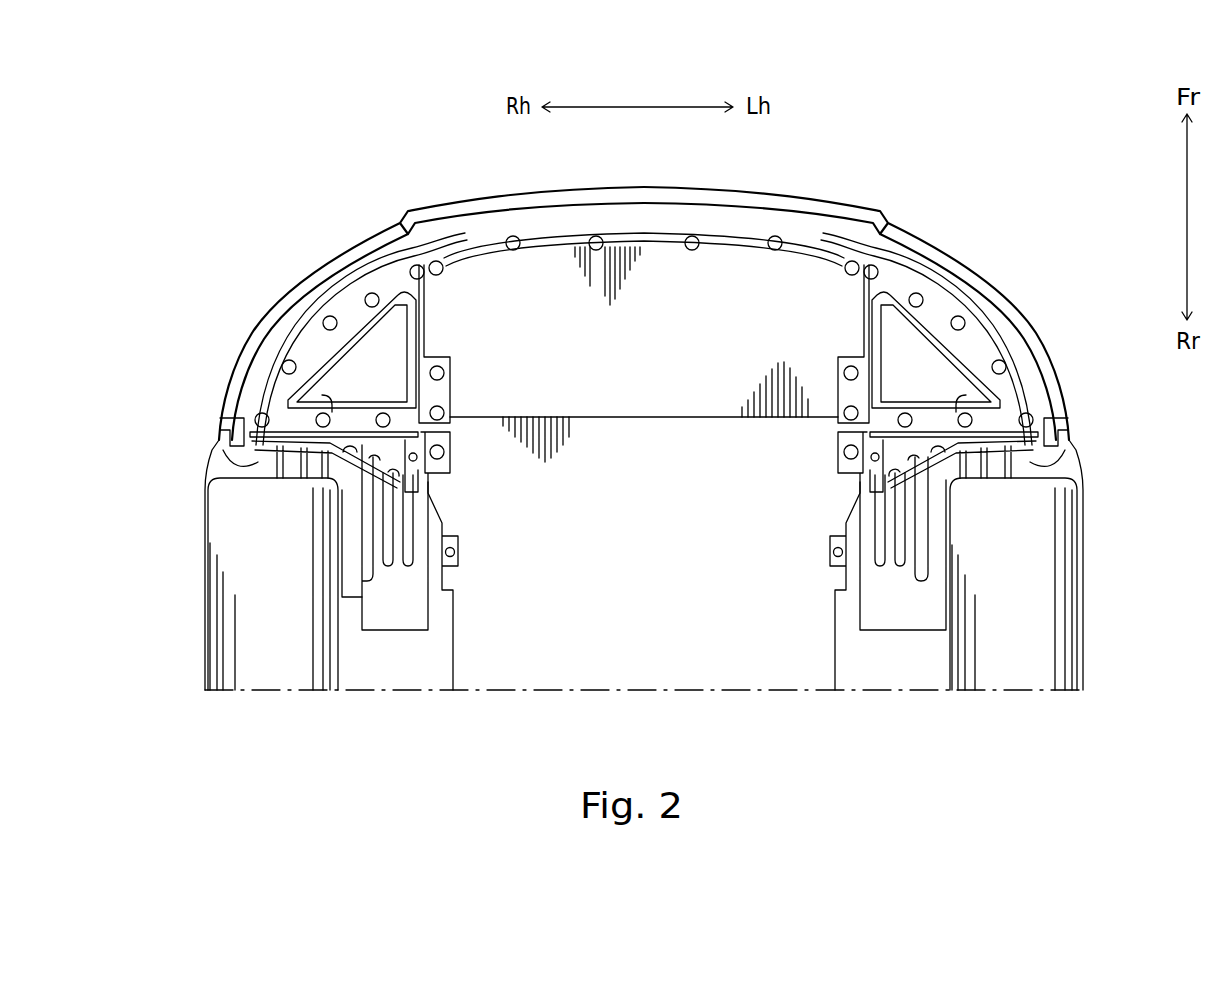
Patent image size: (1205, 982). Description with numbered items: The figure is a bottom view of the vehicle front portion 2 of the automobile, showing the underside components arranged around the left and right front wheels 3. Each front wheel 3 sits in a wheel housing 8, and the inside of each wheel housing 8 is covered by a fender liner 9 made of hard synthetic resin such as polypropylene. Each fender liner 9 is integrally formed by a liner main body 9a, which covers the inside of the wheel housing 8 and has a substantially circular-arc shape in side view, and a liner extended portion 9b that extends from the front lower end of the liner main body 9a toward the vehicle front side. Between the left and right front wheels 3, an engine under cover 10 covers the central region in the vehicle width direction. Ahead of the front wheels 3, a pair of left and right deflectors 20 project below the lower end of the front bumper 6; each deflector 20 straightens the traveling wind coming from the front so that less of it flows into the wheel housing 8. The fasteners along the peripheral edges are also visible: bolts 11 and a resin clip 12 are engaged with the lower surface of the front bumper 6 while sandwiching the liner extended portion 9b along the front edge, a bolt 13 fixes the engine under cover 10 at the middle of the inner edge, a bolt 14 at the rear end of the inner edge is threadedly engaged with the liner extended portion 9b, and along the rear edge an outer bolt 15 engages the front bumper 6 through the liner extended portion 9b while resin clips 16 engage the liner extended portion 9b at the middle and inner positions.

The vehicle front portion 2 is at (232, 172).
The front wheel 3 is at (258, 600).
The front bumper 6 is at (699, 214).
The wheel housing 8 is at (399, 668).
The fender liner 9 is at (644, 558).
The liner main body 9a is at (243, 470).
The liner extended portion 9b is at (345, 490).
The engine under cover 10 is at (542, 318).
The bolt 11 is at (285, 360).
The resin clip 12 is at (386, 284).
The bolt 13 is at (437, 368).
The bolt 14 is at (432, 490).
The bolt 15 is at (236, 443).
The resin clip 16 is at (420, 392).
The deflector 20 is at (316, 388).